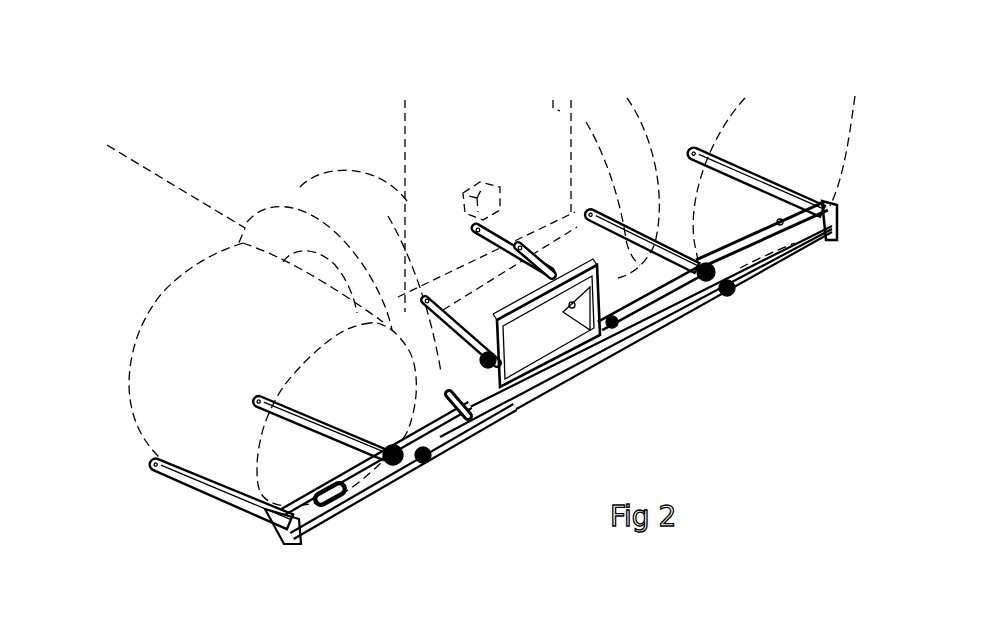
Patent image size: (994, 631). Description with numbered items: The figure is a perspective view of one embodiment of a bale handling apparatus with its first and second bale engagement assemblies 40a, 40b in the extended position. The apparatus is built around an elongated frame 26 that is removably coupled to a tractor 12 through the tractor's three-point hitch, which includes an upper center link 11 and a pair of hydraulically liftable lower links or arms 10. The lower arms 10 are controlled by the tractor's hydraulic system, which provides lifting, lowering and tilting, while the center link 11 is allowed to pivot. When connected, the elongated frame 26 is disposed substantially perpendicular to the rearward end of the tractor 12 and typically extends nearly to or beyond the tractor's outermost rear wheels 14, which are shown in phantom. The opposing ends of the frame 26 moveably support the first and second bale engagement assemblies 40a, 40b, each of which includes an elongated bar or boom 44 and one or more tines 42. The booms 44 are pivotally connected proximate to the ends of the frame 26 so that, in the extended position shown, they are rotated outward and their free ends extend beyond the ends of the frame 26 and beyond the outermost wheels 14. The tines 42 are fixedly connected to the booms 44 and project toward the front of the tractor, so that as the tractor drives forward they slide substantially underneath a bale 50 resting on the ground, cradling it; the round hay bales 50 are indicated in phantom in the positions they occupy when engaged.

The lower links/arms 10 is at (463, 350).
The upper center link 11 is at (500, 240).
The tractor 12 is at (491, 131).
The rear wheels 14 is at (356, 209).
The elongated frame 26 is at (535, 378).
The first bale engagement assembly 40a is at (403, 484).
The second bale engagement assembly 40b is at (720, 304).
The tines 42 is at (220, 503).
The boom 44 is at (795, 238).
The bale 50 is at (153, 303).